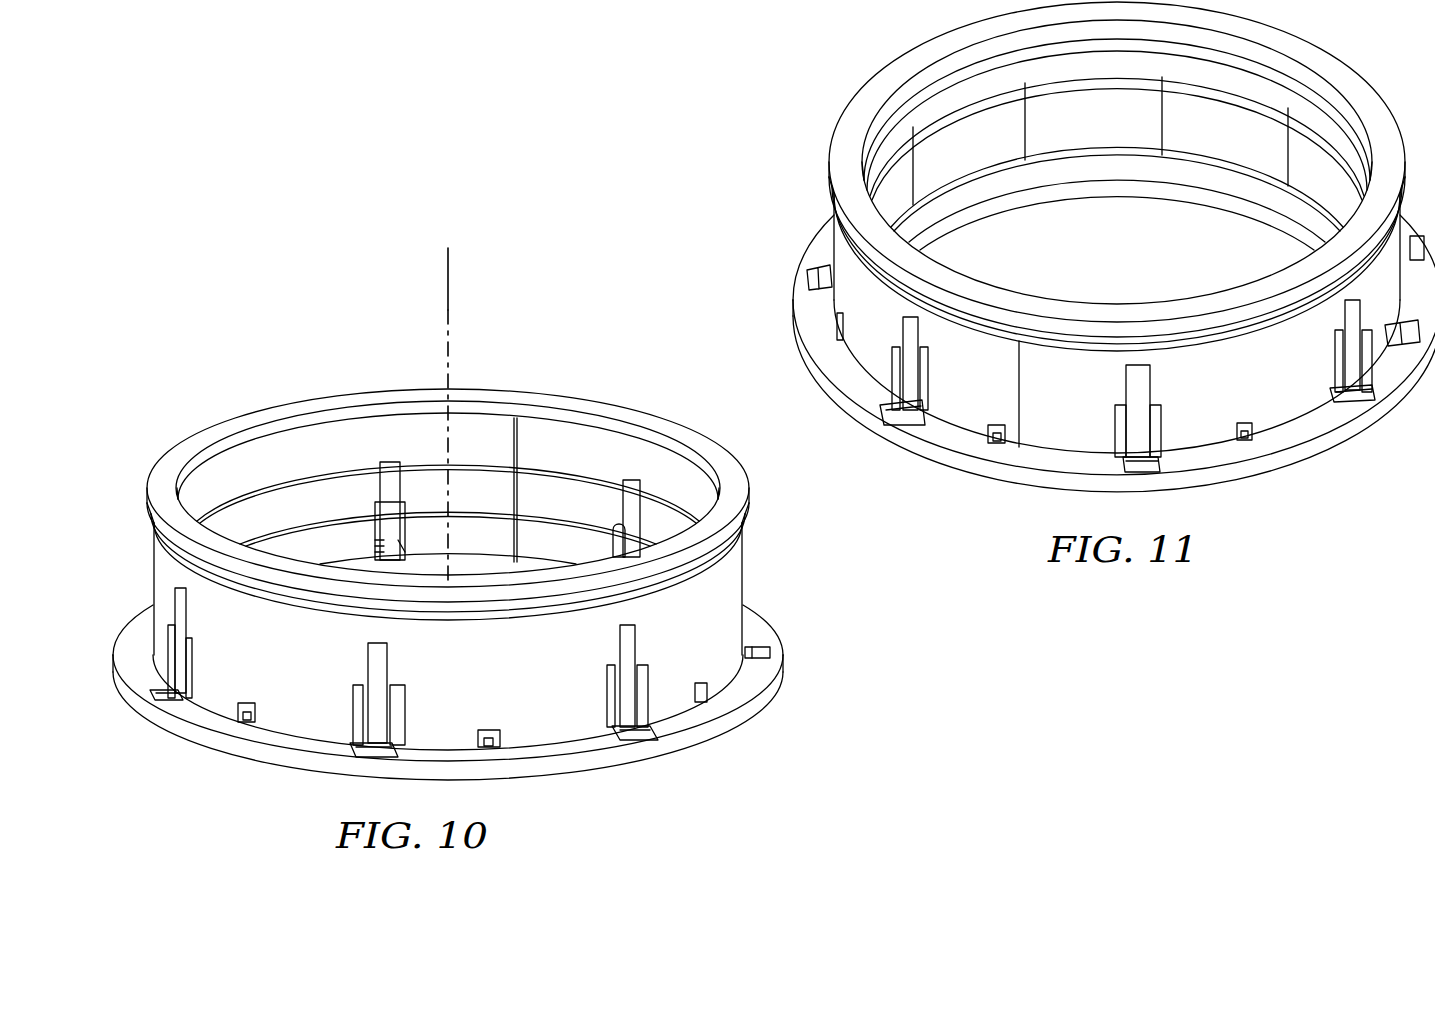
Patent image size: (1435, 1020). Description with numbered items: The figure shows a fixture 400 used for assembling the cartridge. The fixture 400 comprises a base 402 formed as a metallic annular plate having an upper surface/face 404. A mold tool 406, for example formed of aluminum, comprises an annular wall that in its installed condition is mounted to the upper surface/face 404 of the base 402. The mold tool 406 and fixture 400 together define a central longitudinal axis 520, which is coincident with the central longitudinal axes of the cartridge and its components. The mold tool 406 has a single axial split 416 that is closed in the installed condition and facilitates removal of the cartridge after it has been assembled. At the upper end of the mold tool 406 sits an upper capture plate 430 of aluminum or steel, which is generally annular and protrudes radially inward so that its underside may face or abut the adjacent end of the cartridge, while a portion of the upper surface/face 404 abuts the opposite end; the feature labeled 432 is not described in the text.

The fixture 400 is at (533, 514).
The base 402 is at (764, 700).
The upper surface/face 404 is at (752, 684).
The mold tool 406 is at (745, 572).
The axial split 416 is at (515, 433).
The upper capture plate 430 is at (472, 384).
The top flange outer rim 432 is at (169, 476).
The central longitudinal axis 520 is at (446, 296).